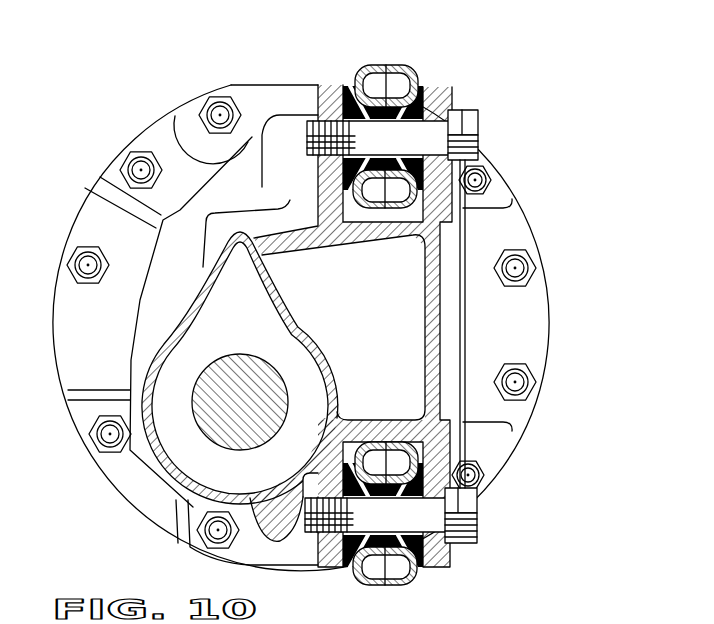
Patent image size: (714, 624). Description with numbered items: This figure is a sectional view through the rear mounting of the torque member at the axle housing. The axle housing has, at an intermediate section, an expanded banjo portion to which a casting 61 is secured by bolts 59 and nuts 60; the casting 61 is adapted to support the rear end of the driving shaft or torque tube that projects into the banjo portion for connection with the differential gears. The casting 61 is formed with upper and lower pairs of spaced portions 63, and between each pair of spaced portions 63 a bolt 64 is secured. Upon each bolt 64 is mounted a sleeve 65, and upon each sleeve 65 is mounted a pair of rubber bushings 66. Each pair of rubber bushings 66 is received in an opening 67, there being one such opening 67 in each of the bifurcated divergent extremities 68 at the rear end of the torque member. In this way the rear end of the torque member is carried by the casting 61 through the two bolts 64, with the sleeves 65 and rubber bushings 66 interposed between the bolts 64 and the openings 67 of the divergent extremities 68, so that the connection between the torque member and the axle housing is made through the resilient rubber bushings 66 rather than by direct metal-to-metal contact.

The bolts 59 is at (527, 270).
The nuts 60 is at (528, 252).
The casting 61 is at (178, 475).
The bearing housing plate 63 is at (320, 88).
The bolts 64 is at (463, 110).
The sleeve 65 is at (447, 140).
The rubber bushings 66 is at (394, 140).
The opening 67 is at (398, 92).
The bifurcated divergent extremities 68 is at (380, 66).